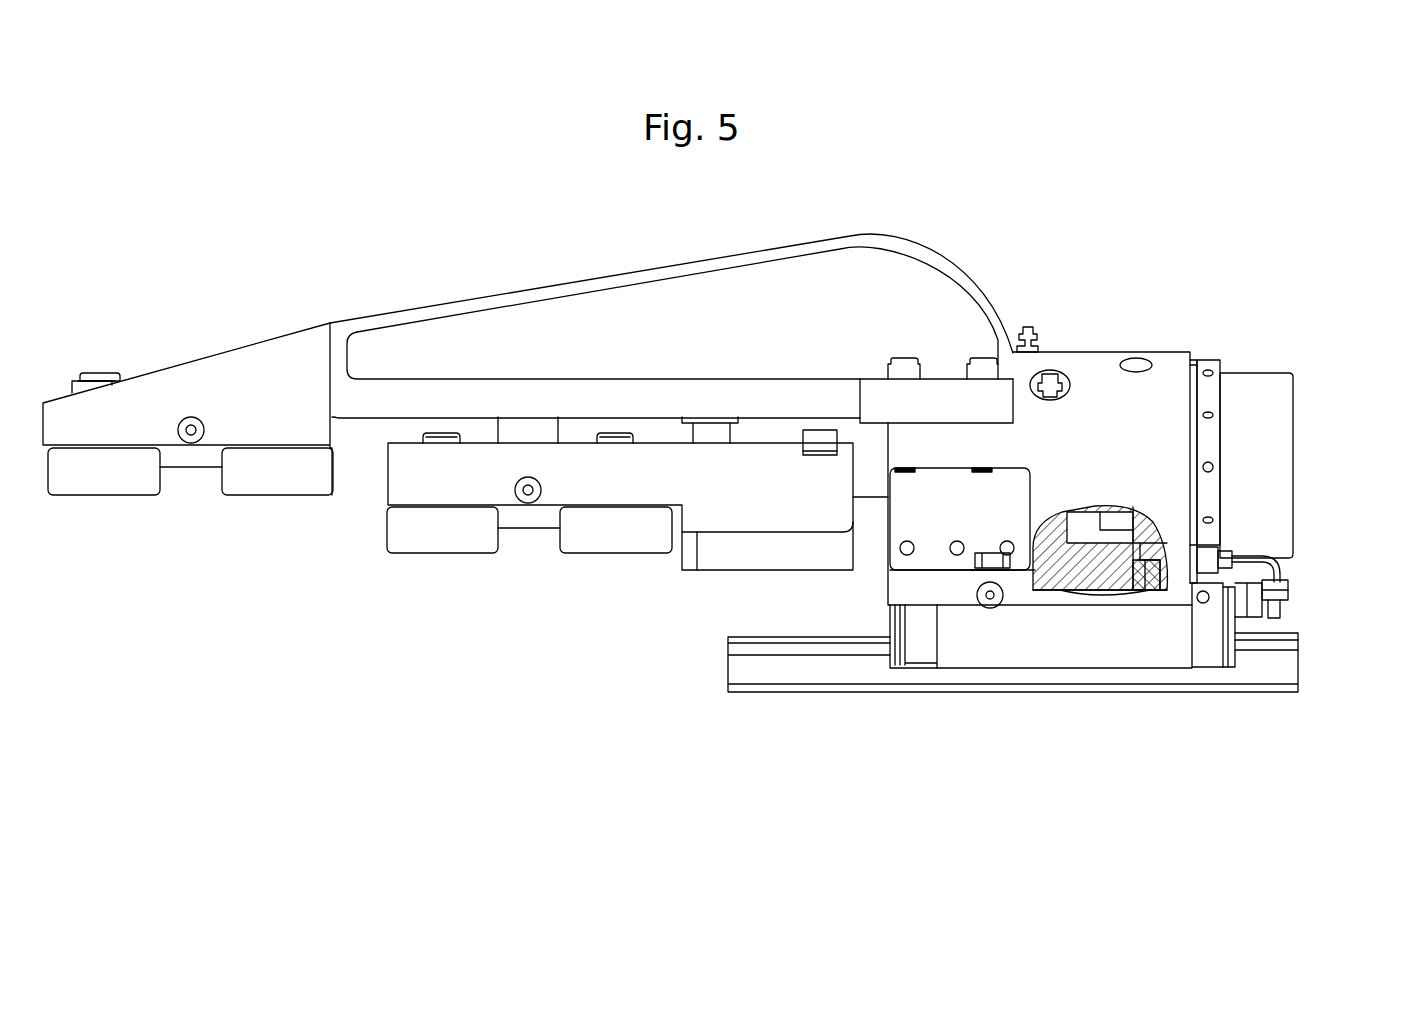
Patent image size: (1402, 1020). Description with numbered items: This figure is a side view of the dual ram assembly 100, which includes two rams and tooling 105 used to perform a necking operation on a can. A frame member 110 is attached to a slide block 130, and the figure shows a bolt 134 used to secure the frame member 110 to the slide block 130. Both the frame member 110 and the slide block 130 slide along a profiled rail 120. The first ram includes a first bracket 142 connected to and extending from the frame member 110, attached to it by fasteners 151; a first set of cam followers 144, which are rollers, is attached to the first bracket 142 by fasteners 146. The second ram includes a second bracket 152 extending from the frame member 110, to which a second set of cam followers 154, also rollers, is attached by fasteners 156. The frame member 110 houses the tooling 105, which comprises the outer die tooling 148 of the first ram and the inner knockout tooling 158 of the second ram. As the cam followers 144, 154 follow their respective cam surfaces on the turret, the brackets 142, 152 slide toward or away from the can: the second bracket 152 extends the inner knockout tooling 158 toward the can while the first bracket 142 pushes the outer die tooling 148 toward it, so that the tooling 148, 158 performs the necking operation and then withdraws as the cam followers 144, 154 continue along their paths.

The dual ram assembly 100 is at (206, 276).
The tooling 105 is at (1258, 346).
The frame member 110 is at (1104, 353).
The profiled rail 120 is at (820, 652).
The slide block 130 is at (1205, 652).
The bolt 134 is at (1140, 594).
The first bracket 142 is at (570, 278).
The first set of cam followers 144 is at (95, 486).
The fasteners 146 is at (96, 380).
The outer die tooling 148 is at (1272, 427).
The fasteners 151 is at (902, 358).
The second bracket 152 is at (747, 518).
The second set of cam followers 154 is at (433, 541).
The fasteners 156 is at (440, 432).
The inner knockout tooling 158 is at (1312, 468).